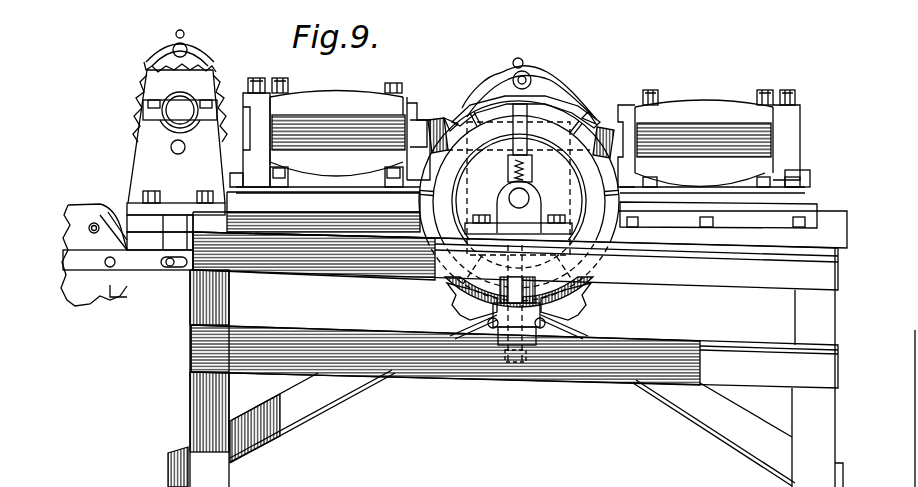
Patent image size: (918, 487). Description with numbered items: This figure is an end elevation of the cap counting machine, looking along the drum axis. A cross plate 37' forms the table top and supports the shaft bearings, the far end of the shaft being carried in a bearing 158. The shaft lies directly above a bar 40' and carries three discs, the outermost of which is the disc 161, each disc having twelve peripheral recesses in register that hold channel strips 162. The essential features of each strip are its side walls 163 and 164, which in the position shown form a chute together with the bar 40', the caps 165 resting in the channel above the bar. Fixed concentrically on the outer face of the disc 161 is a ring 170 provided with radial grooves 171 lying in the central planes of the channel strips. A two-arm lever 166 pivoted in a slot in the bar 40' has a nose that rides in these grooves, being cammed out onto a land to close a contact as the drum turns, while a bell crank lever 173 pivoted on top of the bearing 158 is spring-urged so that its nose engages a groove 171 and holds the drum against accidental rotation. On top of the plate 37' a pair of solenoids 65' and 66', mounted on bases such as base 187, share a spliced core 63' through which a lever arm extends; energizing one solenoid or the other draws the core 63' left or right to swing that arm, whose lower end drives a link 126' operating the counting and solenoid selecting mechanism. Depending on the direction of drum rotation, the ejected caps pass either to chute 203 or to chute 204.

The solenoid 65' is at (330, 130).
The solenoid 66' is at (714, 130).
The core 63' is at (521, 119).
The ring 170 is at (544, 116).
The radial grooves 171 is at (566, 119).
The bell crank lever 173 is at (510, 150).
The disc 161 is at (531, 182).
The bearing 158 is at (512, 233).
The base 187 is at (648, 216).
The cross plate 37' is at (520, 232).
The link 126' is at (127, 258).
The channel strips 162 is at (448, 278).
The side wall 163 is at (490, 303).
The side wall 164 is at (565, 300).
The caps 165 is at (531, 340).
The bar 40' is at (493, 324).
The two-arm lever 166 is at (513, 366).
The chute 203 is at (338, 396).
The chute 204 is at (687, 403).